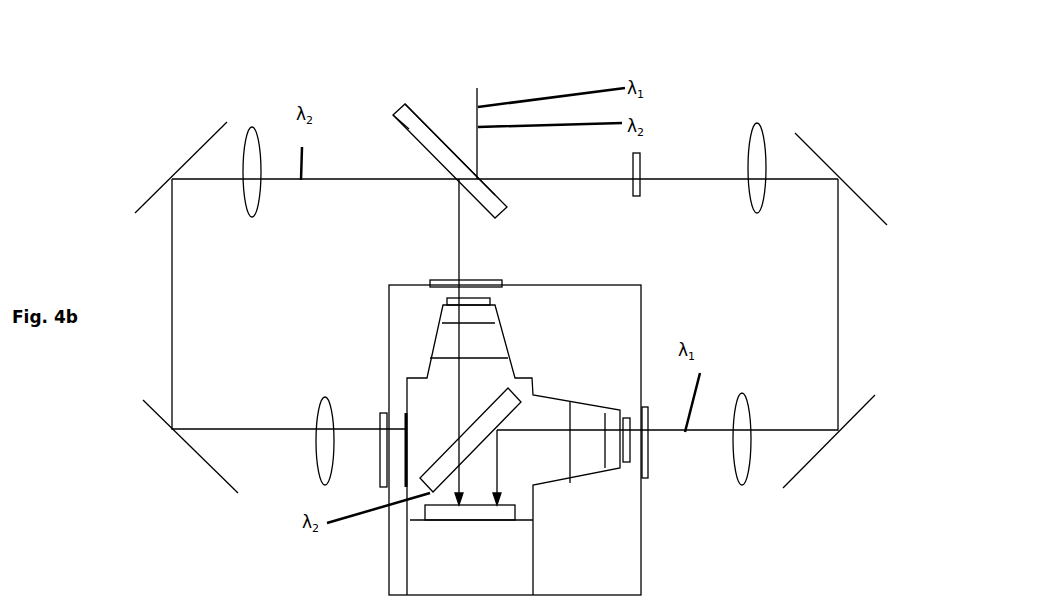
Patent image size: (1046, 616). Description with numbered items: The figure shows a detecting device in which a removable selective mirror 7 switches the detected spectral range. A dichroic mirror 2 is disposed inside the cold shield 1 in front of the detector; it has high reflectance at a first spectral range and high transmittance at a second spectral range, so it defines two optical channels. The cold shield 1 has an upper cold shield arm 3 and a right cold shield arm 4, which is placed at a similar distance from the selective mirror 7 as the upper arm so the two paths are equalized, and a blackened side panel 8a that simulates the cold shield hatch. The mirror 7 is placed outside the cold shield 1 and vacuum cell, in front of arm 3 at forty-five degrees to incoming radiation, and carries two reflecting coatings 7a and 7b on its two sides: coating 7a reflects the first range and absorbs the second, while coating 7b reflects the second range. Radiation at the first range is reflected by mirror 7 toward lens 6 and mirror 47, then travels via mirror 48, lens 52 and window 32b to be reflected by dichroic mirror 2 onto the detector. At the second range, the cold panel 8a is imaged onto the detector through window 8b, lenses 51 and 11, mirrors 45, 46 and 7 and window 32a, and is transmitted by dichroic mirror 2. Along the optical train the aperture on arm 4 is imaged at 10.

The cold shield 1 is at (533, 377).
The dichroic mirror 2 is at (475, 422).
The upper cold shield arm 3 is at (507, 337).
The right cold shield arm 4 is at (583, 477).
The lens 6 is at (748, 188).
The selective mirror 7 is at (454, 160).
The reflecting coating 7a is at (428, 125).
The reflecting coating 7b is at (409, 129).
The blackened side panel 8a is at (400, 418).
The window 8b is at (378, 478).
The aperture image 10 is at (633, 181).
The lens 11 is at (259, 205).
The window 32a is at (498, 283).
The window 32b is at (652, 467).
The mirror 45 is at (190, 447).
The mirror 46 is at (187, 158).
The mirror 47 is at (822, 158).
The mirror 48 is at (800, 472).
The lens 51 is at (320, 418).
The lens 52 is at (743, 485).